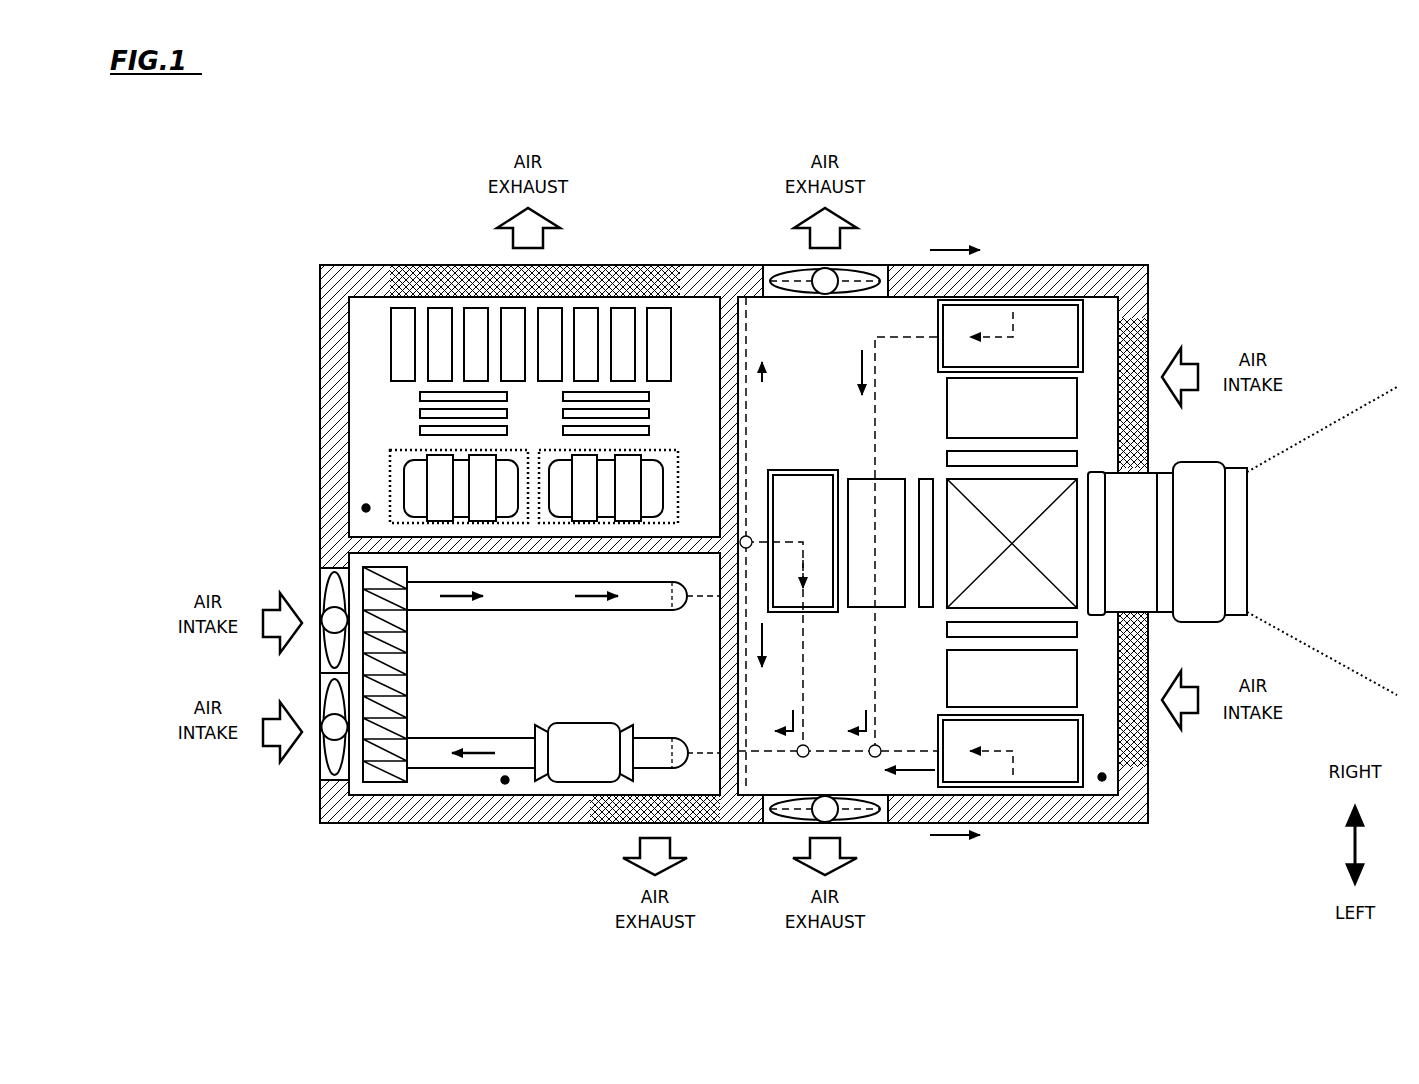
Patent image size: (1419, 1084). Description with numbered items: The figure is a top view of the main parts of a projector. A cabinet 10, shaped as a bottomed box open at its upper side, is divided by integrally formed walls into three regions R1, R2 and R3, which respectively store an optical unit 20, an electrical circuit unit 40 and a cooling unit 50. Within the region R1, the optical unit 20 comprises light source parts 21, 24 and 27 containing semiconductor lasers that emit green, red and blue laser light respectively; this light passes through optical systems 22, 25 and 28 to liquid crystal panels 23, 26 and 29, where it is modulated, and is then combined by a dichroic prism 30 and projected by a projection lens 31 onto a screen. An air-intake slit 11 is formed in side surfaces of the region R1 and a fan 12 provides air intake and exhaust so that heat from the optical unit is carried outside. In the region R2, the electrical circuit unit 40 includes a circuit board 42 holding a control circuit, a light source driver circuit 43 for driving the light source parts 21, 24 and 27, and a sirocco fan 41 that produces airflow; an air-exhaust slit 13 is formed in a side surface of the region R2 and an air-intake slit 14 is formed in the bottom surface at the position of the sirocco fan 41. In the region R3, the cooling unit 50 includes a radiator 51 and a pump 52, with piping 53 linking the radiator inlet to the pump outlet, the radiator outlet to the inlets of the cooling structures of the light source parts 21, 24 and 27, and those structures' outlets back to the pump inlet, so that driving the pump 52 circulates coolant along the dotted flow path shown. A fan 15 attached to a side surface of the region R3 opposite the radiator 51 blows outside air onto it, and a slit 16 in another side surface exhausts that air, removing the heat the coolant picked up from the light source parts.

The cabinet 10 is at (1128, 255).
The air-intake slit 11 is at (1148, 325).
The fan 12 is at (875, 245).
The air-exhaust slit 13 is at (425, 268).
The air-intake slit 14 is at (397, 452).
The fan 15 is at (320, 572).
The slit 16 is at (612, 830).
The optical unit 20 is at (770, 325).
The light source part 21 is at (806, 470).
The optical system 22 is at (860, 478).
The liquid crystal panel 23 is at (926, 478).
The light source part 24 is at (1043, 318).
The optical system 25 is at (960, 400).
The liquid crystal panel 26 is at (957, 450).
The light source part 27 is at (1043, 778).
The optical system 28 is at (955, 678).
The liquid crystal panel 29 is at (950, 637).
The dichroic prism 30 is at (950, 607).
The projection lens 31 is at (1205, 470).
The electrical circuit unit 40 is at (463, 384).
The sirocco fan 41 is at (415, 503).
The circuit board 42 is at (415, 412).
The light source driver circuit 43 is at (403, 352).
The cooling unit 50 is at (512, 737).
The radiator 51 is at (400, 698).
The pump 52 is at (610, 723).
The piping 53 is at (541, 610).
The region R1 is at (1102, 777).
The region R2 is at (366, 508).
The region R3 is at (505, 780).